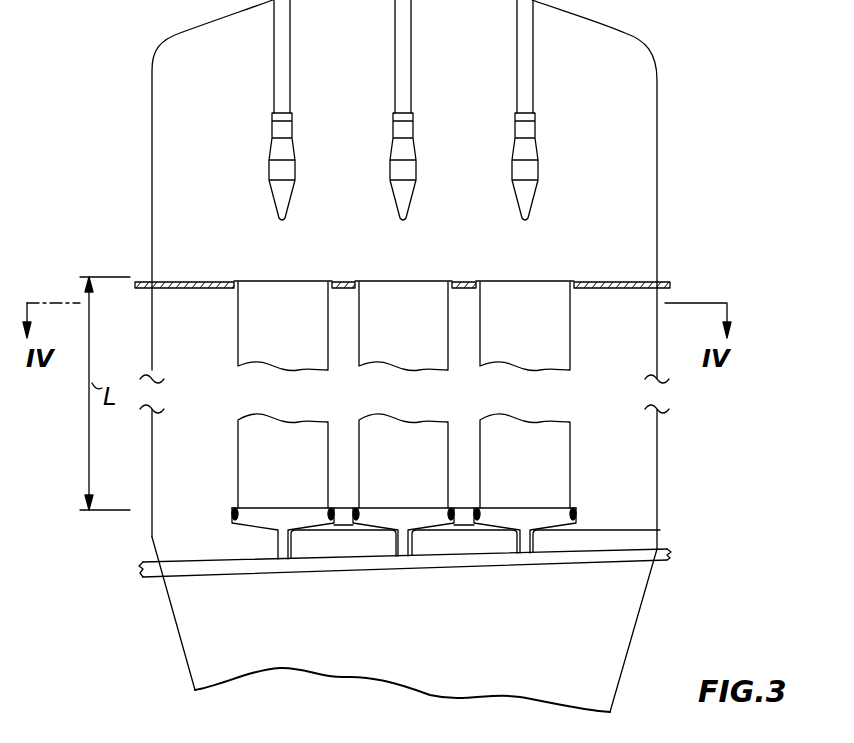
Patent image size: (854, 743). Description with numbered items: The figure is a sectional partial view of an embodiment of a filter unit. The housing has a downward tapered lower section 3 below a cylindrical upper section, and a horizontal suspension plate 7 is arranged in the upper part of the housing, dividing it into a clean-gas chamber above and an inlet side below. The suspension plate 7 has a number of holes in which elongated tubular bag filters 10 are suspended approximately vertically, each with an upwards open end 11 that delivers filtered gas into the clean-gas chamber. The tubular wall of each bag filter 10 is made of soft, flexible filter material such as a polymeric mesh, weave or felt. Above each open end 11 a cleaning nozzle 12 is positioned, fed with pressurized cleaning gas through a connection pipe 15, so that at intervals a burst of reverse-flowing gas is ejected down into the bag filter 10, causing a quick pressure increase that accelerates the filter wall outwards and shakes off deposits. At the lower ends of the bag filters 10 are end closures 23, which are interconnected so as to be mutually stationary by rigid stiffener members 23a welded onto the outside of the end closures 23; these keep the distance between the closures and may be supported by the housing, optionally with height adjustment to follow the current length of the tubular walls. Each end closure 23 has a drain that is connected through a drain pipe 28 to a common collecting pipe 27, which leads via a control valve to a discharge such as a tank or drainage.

The lower section 3 is at (625, 657).
The suspension plate 7 is at (592, 282).
The bag filter 10 is at (550, 334).
The open end 11 is at (520, 282).
The cleaning nozzle 12 is at (531, 170).
The connection pipe 15 is at (526, 45).
The end closure 23 is at (576, 527).
The stiffener member 23a is at (347, 510).
The collecting pipe 27 is at (440, 563).
The drain pipe 28 is at (523, 538).